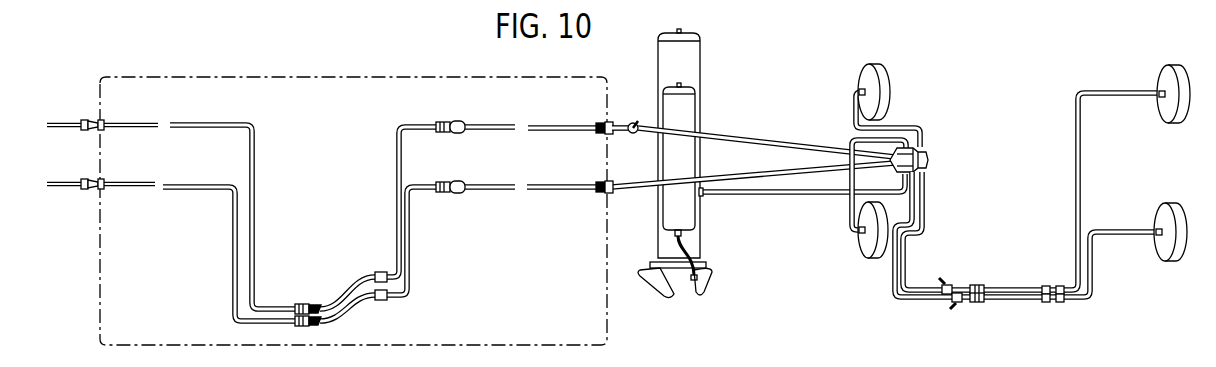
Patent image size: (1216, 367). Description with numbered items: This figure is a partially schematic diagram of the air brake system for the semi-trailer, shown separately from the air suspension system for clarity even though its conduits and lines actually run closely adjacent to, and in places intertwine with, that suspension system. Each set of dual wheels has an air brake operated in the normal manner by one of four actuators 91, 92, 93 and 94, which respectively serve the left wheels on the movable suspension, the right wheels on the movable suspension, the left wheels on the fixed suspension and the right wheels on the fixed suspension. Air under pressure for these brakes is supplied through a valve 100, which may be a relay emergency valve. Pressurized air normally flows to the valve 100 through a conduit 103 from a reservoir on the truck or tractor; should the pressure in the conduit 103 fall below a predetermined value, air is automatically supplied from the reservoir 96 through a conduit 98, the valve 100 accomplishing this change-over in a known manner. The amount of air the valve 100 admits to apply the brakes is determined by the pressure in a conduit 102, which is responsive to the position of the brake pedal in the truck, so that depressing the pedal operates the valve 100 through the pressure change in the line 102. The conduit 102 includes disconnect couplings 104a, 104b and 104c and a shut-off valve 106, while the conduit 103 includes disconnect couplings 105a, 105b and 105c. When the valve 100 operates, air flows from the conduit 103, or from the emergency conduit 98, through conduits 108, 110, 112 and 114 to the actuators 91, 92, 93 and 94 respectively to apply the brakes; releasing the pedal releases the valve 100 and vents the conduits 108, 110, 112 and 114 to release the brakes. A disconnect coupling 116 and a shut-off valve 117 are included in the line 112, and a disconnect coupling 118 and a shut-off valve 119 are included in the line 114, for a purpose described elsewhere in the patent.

The actuator 91 is at (860, 245).
The actuator 92 is at (887, 66).
The actuator 93 is at (1163, 252).
The actuator 94 is at (1161, 68).
The reservoir 96 is at (695, 64).
The conduit 98 is at (766, 195).
The valve 100 is at (927, 152).
The conduit 102 is at (190, 123).
The conduit 103 is at (185, 189).
The disconnect coupling 104a is at (100, 121).
The disconnect coupling 104b is at (306, 304).
The disconnect coupling 104c is at (601, 122).
The disconnect coupling 105a is at (96, 189).
The disconnect coupling 105b is at (302, 327).
The disconnect coupling 105c is at (601, 193).
The shut-off valve 106 is at (633, 122).
The conduit 108 is at (852, 200).
The conduit 110 is at (853, 104).
The conduit 112 is at (891, 272).
The conduit 114 is at (921, 226).
The disconnect coupling 116 is at (982, 303).
The shut-off valve 117 is at (959, 303).
The disconnect coupling 118 is at (979, 284).
The shut-off valve 119 is at (948, 285).